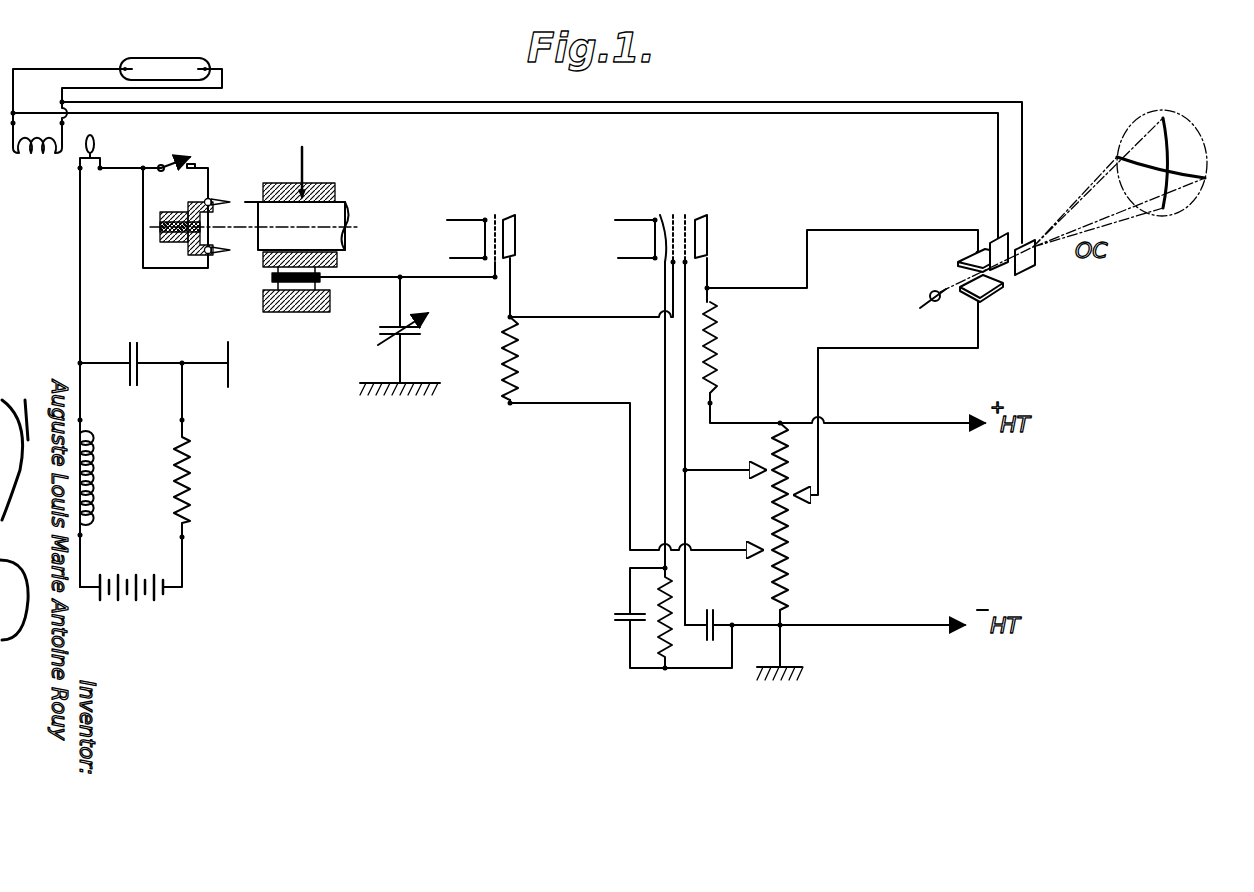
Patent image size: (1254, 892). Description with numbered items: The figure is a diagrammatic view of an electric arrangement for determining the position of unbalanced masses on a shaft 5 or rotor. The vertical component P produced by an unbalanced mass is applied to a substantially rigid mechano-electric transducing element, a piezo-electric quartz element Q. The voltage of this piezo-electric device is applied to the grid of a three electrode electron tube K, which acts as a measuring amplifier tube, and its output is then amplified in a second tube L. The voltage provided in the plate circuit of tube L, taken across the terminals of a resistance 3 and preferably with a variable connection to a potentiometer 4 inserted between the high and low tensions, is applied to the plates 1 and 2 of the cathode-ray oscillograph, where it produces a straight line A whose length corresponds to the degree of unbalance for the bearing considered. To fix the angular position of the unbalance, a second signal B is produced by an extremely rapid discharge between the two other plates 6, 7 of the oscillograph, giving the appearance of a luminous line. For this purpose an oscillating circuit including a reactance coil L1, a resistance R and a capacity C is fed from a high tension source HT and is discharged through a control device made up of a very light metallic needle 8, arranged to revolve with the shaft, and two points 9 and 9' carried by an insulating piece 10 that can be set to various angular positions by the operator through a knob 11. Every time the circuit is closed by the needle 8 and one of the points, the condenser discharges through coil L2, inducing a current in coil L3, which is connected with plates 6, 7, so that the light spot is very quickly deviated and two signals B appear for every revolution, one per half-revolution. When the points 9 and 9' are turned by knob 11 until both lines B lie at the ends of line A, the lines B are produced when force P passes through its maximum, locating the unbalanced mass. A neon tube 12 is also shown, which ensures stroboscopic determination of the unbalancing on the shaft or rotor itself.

The oscillograph plate 1 is at (968, 257).
The oscillograph plate 2 is at (992, 291).
The resistance 3 is at (719, 347).
The potentiometer 4 is at (790, 543).
The shaft 5 is at (345, 210).
The oscillograph plate 6 is at (995, 243).
The oscillograph plate 7 is at (1032, 268).
The metallic needle 8 is at (245, 202).
The point 9 is at (218, 185).
The point 9' is at (226, 262).
The insulating piece 10 is at (188, 246).
The knob 11 is at (160, 242).
The neon tube 12 is at (170, 72).
The vertical component P is at (312, 170).
The piezo-electric quartz element Q is at (300, 295).
The three electrode electron tube K is at (483, 292).
The second tube L is at (661, 223).
The capacity C is at (146, 358).
The resistance R is at (194, 478).
The reactance coil L1 is at (103, 477).
The coil L2 is at (107, 144).
The coil L3 is at (37, 154).
The high tension source HT is at (131, 602).
The straight line signal A is at (1174, 163).
The signal B is at (1171, 174).